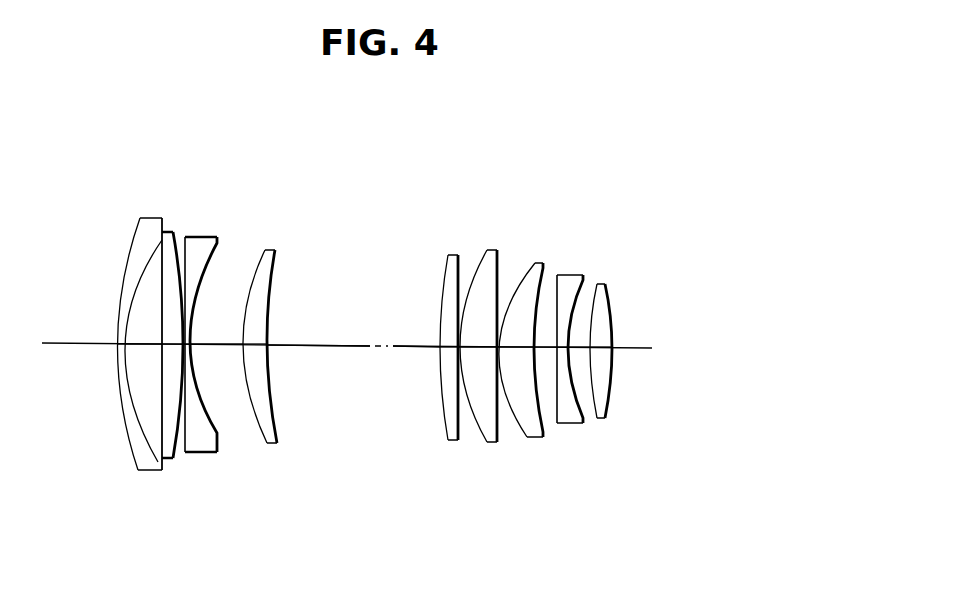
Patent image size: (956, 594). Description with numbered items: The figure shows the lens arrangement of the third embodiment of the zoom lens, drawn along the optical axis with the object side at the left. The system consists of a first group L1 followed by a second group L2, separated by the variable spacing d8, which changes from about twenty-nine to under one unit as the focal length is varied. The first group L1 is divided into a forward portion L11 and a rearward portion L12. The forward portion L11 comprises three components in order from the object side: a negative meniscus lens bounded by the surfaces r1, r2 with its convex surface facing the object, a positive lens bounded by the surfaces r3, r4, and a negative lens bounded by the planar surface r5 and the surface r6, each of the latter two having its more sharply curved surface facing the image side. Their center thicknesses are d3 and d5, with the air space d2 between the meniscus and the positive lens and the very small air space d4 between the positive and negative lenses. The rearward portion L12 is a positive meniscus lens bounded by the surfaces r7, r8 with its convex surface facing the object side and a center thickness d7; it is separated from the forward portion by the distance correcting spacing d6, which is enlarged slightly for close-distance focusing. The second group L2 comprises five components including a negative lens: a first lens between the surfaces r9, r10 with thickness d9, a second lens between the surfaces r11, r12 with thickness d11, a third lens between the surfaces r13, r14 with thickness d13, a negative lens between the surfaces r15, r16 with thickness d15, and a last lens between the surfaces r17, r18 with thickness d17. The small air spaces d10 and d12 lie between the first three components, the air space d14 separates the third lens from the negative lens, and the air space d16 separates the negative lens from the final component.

The first group L1 is at (305, 116).
The forward portion of the first group L11 is at (233, 174).
The rearward portion of the first group L12 is at (273, 250).
The second group L2 is at (638, 178).
The first refractive surface r1 is at (117, 338).
The second refractive surface r2 is at (157, 463).
The third refractive surface r3 is at (162, 468).
The fourth refractive surface r4 is at (176, 459).
The fifth refractive surface r5 is at (186, 453).
The sixth refractive surface r6 is at (217, 453).
The seventh refractive surface r7 is at (265, 440).
The eighth refractive surface r8 is at (277, 443).
The ninth refractive surface r9 is at (450, 440).
The tenth refractive surface r10 is at (459, 440).
The eleventh refractive surface r11 is at (480, 440).
The twelfth refractive surface r12 is at (498, 440).
The thirteenth refractive surface r13 is at (527, 437).
The fourteenth refractive surface r14 is at (543, 432).
The fifteenth refractive surface r15 is at (560, 423).
The sixteenth refractive surface r16 is at (585, 422).
The seventeenth refractive surface r17 is at (600, 418).
The eighteenth refractive surface r18 is at (607, 418).
The air space between the first and second lenses d2 is at (131, 332).
The center thickness of the second lens d3 is at (167, 340).
The air space between the second and third lenses d4 is at (187, 348).
The center thickness of the third lens d5 is at (191, 340).
The distance correcting spacing d6 is at (216, 333).
The center thickness of the fourth lens d7 is at (262, 338).
The variable spacing d8 is at (353, 335).
The center thickness of the fifth lens d9 is at (442, 345).
The air space between the fifth and sixth lenses d10 is at (460, 340).
The center thickness of the sixth lens d11 is at (478, 338).
The air space between the sixth and seventh lenses d12 is at (497, 352).
The center thickness of the seventh lens d13 is at (516, 338).
The air space between the seventh and eighth lenses d14 is at (546, 347).
The center thickness of the eighth lens d15 is at (561, 352).
The air space between the eighth and ninth lenses d16 is at (583, 356).
The center thickness of the ninth lens d17 is at (598, 345).